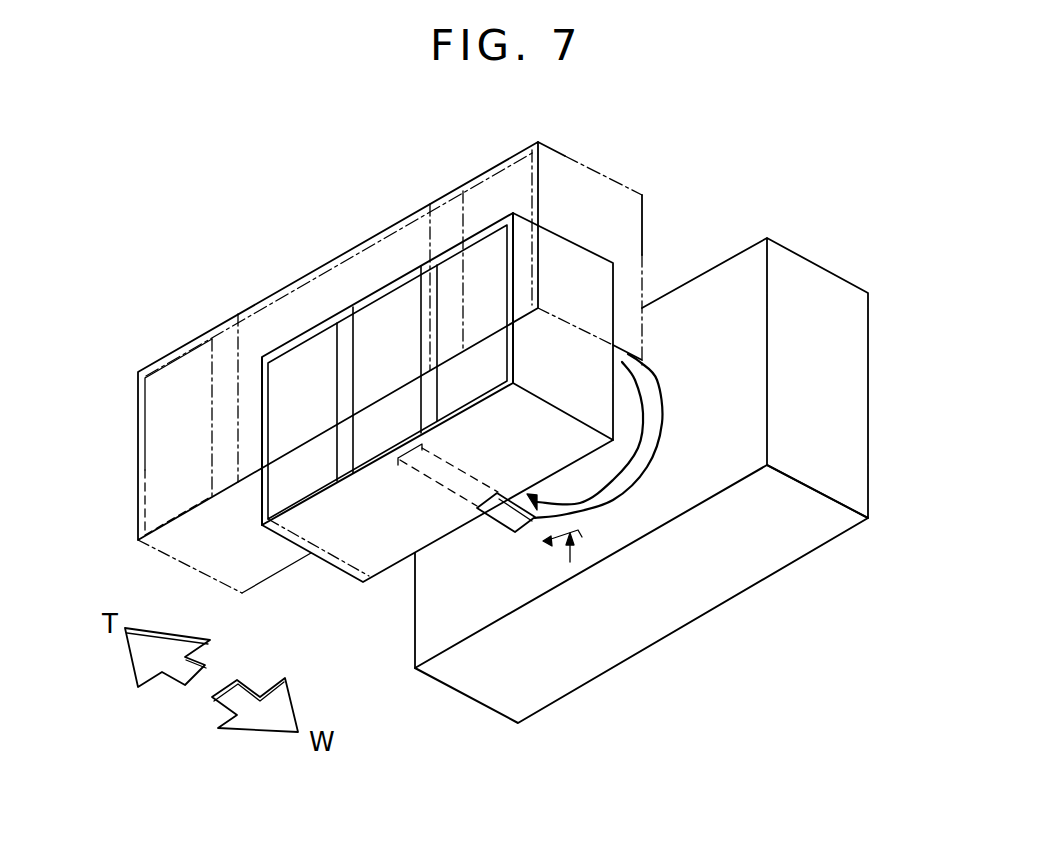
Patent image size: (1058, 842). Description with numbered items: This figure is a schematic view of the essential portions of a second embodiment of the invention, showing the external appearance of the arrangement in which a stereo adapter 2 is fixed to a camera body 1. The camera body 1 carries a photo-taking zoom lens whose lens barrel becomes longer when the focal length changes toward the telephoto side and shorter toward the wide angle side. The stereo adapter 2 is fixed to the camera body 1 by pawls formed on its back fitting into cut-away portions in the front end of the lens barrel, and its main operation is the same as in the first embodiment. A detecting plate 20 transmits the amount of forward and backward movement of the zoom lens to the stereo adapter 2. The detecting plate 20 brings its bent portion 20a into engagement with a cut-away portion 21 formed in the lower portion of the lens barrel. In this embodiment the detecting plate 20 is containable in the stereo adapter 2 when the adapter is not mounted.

The camera body 1 is at (853, 472).
The stereo adapter 2 is at (392, 300).
The detecting plate 20 is at (503, 520).
The bent portion 20a is at (632, 540).
The cut-away portion 21 is at (590, 533).